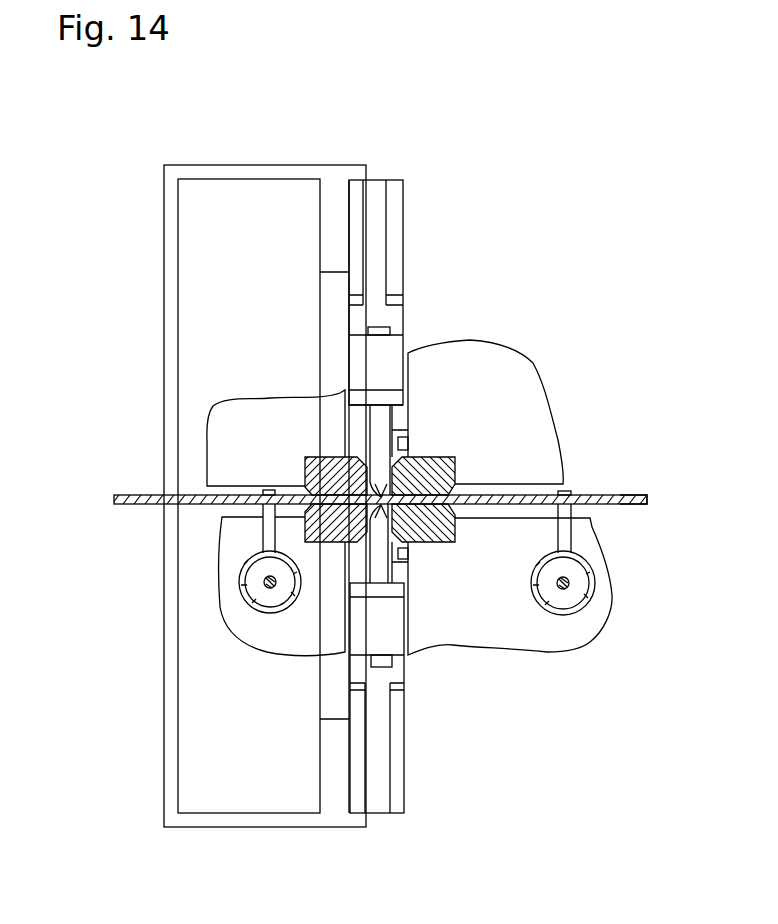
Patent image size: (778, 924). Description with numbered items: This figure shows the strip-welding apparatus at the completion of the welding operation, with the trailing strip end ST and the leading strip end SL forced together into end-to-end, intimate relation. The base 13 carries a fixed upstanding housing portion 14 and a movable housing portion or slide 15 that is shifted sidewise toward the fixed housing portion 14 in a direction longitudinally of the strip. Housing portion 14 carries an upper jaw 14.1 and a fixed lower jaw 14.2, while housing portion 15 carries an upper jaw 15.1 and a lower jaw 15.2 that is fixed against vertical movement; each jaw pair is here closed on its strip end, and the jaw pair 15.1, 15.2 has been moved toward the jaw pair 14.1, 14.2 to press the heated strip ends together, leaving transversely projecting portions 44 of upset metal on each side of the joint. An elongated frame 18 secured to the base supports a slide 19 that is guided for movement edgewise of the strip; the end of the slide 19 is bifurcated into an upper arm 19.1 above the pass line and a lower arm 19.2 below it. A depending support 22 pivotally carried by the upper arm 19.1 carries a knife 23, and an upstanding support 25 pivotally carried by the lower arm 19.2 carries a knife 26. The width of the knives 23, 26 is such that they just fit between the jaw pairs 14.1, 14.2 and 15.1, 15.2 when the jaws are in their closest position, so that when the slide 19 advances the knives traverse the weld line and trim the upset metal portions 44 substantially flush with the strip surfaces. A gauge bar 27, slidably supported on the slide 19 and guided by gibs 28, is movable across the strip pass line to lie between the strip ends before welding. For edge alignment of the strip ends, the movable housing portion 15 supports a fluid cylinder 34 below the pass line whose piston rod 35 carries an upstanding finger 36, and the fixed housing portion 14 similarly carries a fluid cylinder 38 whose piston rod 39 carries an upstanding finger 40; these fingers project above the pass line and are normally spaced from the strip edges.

The base 13 is at (290, 662).
The fixed upstanding housing portion 14 is at (272, 396).
The upper jaw 14.1 is at (336, 476).
The lower jaw 14.2 is at (336, 523).
The movable housing portion or slide 15 is at (543, 362).
The upper jaw 15.1 is at (423, 476).
The lower jaw 15.2 is at (423, 523).
The elongated frame 18 is at (236, 157).
The slide 19 is at (386, 177).
The upper arm 19.1 is at (396, 223).
The lower arm 19.2 is at (400, 765).
The depending support 22 is at (391, 318).
The knife 23 is at (369, 337).
The upstanding support 25 is at (399, 668).
The knife 26 is at (382, 655).
The gauge bar 27 is at (409, 444).
The gibs 28 is at (406, 429).
The fluid cylinder 34 is at (568, 617).
The piston rod 35 is at (570, 582).
The upstanding finger 36 is at (560, 530).
The fluid cylinder 38 is at (285, 610).
The piston rod 39 is at (278, 583).
The upstanding finger 40 is at (270, 545).
The upset metal portions 44 is at (379, 493).
The trailing end ST is at (162, 490).
The leading end SL is at (632, 495).